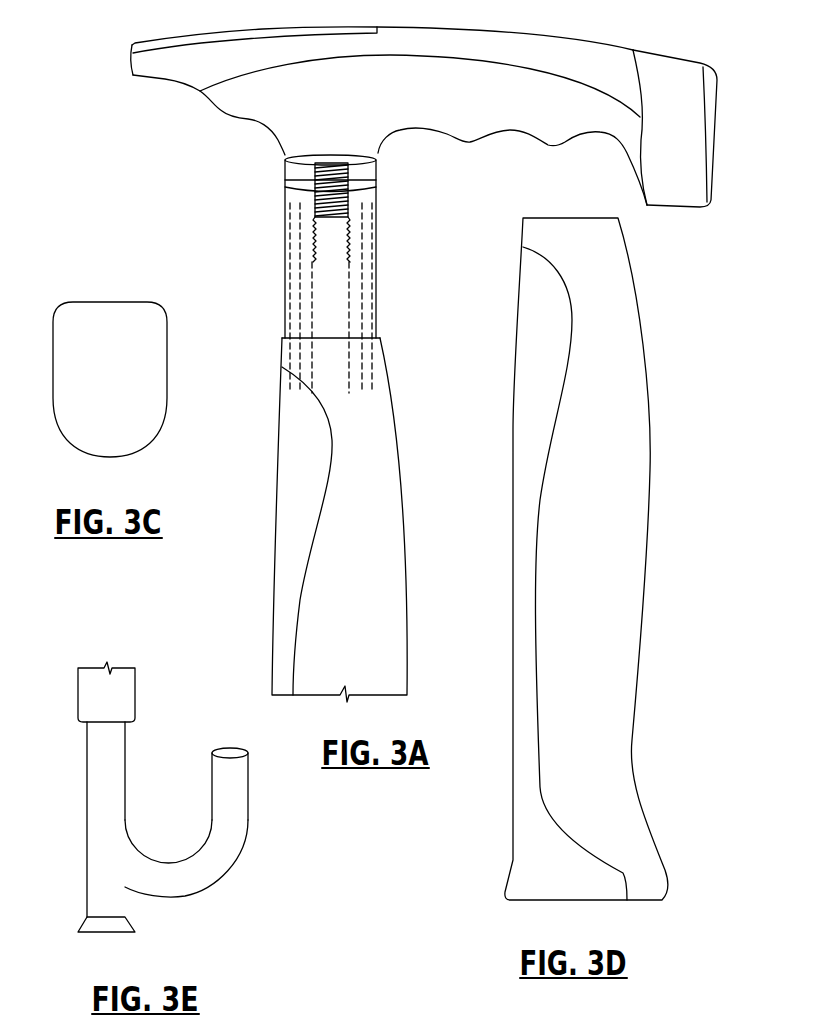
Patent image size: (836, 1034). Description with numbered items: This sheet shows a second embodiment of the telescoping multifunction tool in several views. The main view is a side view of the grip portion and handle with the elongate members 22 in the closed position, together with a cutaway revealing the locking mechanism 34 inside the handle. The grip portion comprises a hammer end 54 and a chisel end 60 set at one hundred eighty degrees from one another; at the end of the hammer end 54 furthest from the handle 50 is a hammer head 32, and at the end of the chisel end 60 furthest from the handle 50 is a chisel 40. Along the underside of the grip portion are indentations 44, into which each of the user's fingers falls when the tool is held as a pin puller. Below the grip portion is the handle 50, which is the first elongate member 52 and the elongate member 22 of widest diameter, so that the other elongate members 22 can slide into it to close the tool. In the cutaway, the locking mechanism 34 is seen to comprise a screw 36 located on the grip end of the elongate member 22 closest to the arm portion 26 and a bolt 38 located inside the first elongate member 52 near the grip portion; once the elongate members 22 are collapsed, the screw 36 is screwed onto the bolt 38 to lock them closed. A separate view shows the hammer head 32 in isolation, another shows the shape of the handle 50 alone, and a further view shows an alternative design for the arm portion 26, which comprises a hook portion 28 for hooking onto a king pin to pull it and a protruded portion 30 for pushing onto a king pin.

In FIG. 3A, the elongate member 22 is at (347, 290).
In FIG. 3E, the arm portion 26 is at (70, 927).
In FIG. 3E, the hook portion 28 is at (242, 800).
In FIG. 3E, the protruded portion 30 is at (122, 922).
In FIG. 3A, the hammer head 32 is at (718, 120).
In FIG. 3C, the hammer head 32 is at (122, 375).
In FIG. 3A, the locking mechanism 34 is at (335, 225).
In FIG. 3A, the screw 36 is at (340, 177).
In FIG. 3A, the bolt 38 is at (352, 253).
In FIG. 3A, the chisel 40 is at (132, 63).
In FIG. 3A, the indentations 44 is at (257, 123).
In FIG. 3A, the handle 50 is at (402, 510).
In FIG. 3D, the handle 50 is at (630, 582).
In FIG. 3A, the first elongate member 52 is at (397, 560).
In FIG. 3A, the hammer end 54 is at (609, 74).
In FIG. 3A, the chisel end 60 is at (196, 77).